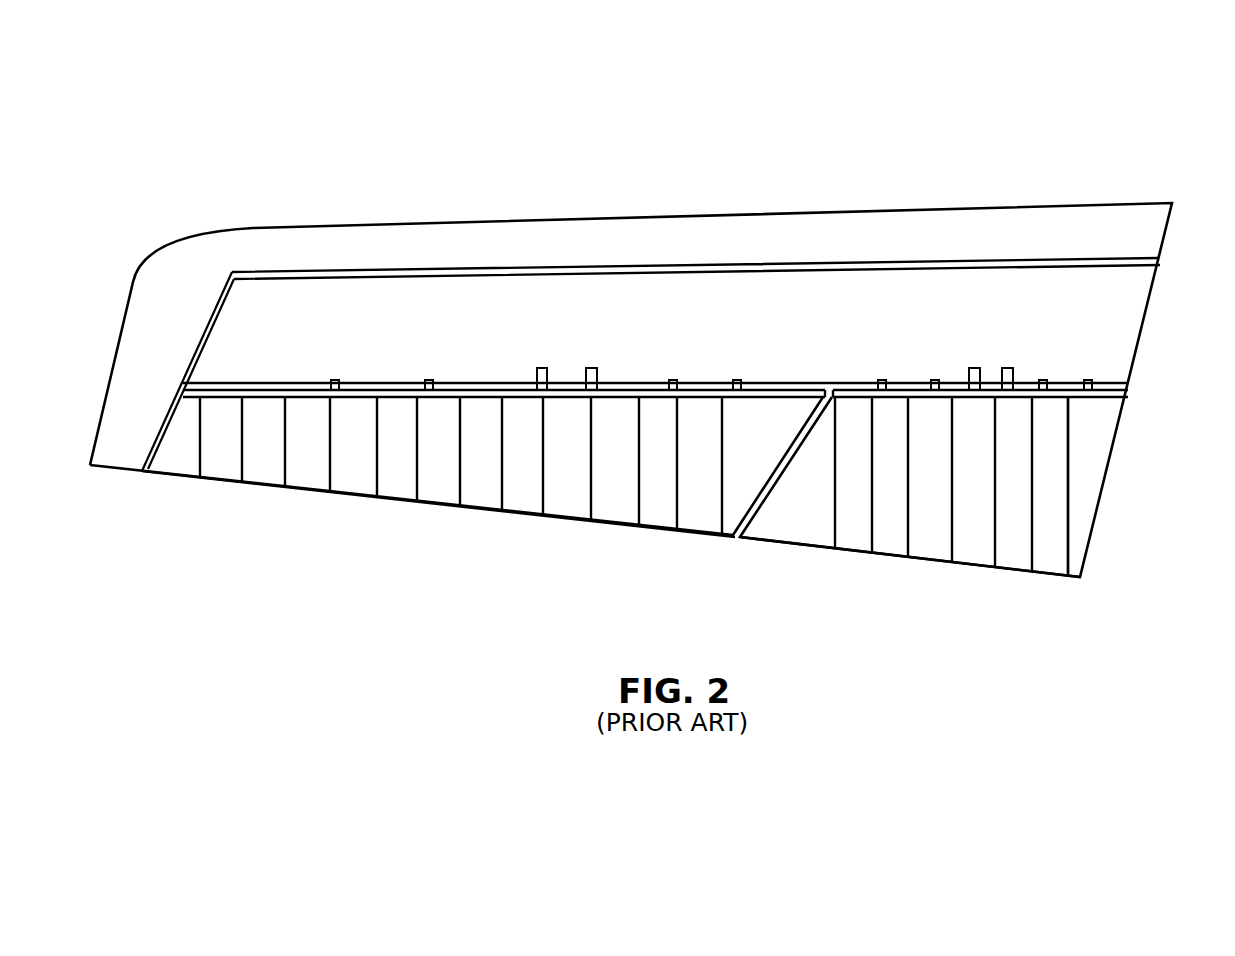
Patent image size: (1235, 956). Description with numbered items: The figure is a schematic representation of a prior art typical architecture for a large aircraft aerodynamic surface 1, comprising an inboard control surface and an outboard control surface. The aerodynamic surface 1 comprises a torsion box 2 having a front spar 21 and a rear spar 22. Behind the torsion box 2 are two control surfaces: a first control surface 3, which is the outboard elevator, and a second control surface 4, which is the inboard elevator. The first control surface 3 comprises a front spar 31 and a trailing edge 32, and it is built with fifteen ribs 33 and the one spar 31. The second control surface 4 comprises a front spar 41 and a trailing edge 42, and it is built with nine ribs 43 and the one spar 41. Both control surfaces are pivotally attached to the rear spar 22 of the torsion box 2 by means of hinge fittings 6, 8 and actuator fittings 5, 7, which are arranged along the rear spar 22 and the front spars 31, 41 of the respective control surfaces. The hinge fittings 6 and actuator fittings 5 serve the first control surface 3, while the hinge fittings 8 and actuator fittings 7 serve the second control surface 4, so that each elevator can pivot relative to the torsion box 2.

The aircraft aerodynamic surface 1 is at (654, 357).
The torsion box 2 is at (635, 300).
The front spar 21 is at (920, 265).
The rear spar 22 is at (1069, 397).
The first control surface 3 is at (483, 518).
The front spar 31 is at (278, 390).
The trailing edge 32 is at (305, 492).
The ribs 33 is at (458, 457).
The second control surface 4 is at (934, 523).
The front spar 41 is at (1130, 395).
The trailing edge 42 is at (982, 567).
The ribs 43 is at (993, 503).
The actuator fitting 5 is at (540, 368).
The hinge fitting 6 is at (429, 380).
The actuator fitting 7 is at (970, 368).
The hinge fitting 8 is at (880, 383).